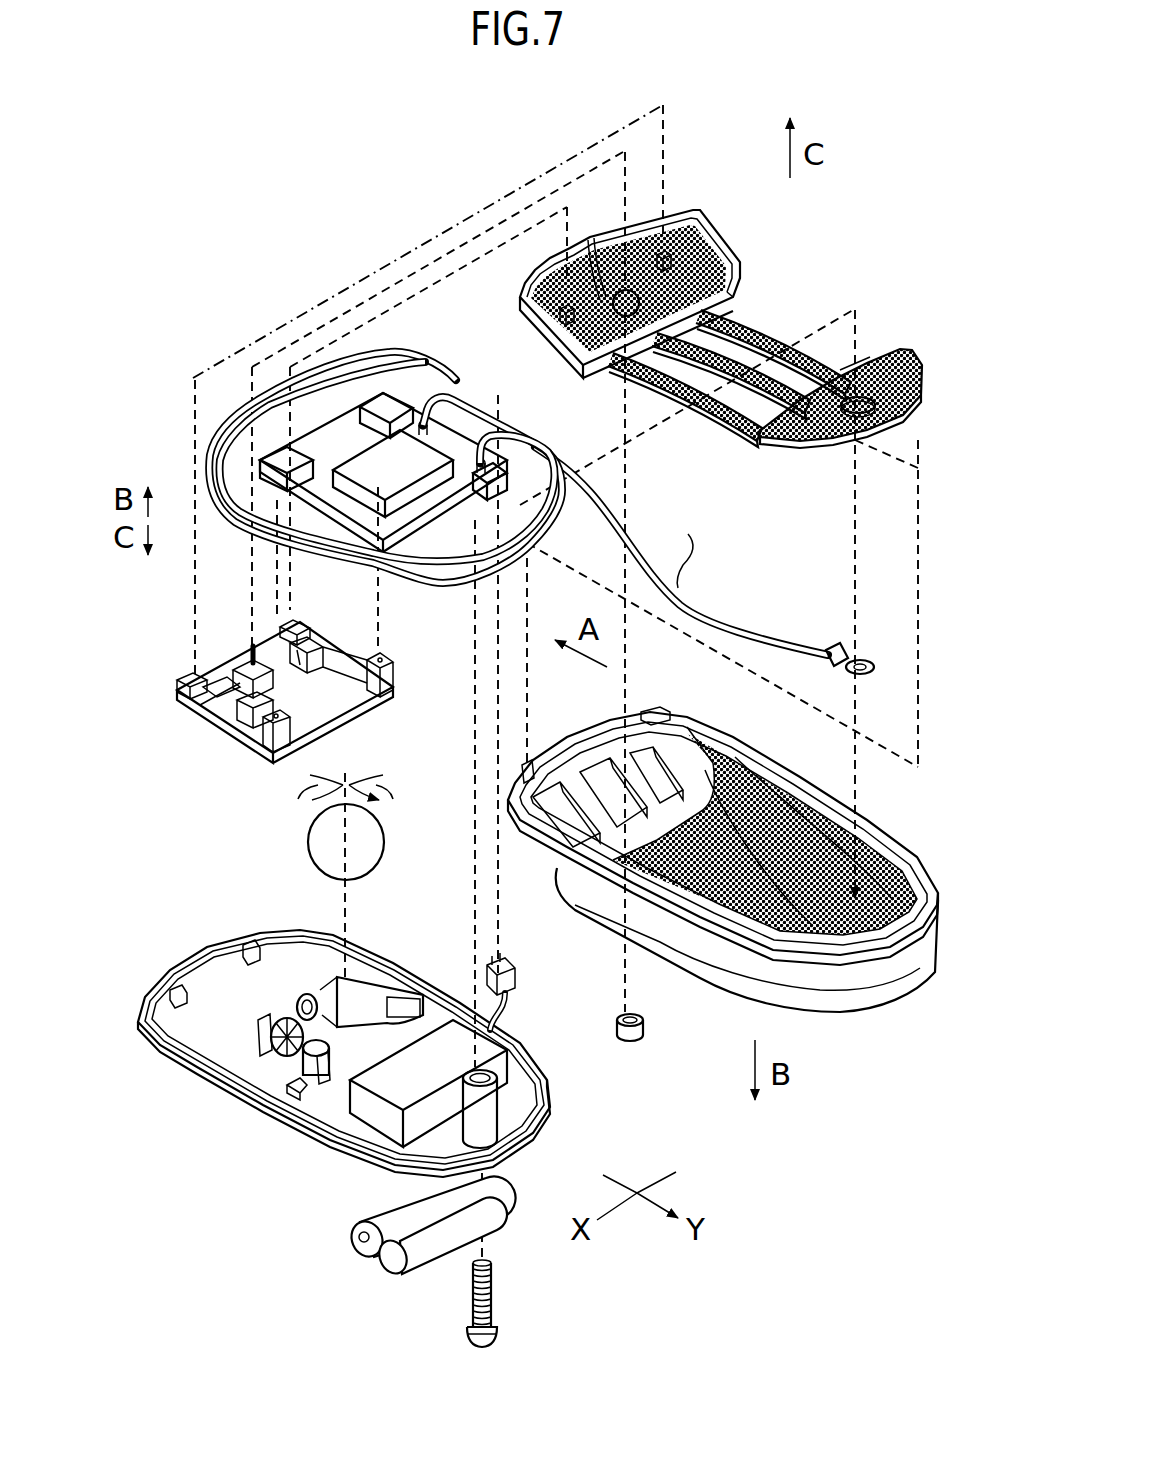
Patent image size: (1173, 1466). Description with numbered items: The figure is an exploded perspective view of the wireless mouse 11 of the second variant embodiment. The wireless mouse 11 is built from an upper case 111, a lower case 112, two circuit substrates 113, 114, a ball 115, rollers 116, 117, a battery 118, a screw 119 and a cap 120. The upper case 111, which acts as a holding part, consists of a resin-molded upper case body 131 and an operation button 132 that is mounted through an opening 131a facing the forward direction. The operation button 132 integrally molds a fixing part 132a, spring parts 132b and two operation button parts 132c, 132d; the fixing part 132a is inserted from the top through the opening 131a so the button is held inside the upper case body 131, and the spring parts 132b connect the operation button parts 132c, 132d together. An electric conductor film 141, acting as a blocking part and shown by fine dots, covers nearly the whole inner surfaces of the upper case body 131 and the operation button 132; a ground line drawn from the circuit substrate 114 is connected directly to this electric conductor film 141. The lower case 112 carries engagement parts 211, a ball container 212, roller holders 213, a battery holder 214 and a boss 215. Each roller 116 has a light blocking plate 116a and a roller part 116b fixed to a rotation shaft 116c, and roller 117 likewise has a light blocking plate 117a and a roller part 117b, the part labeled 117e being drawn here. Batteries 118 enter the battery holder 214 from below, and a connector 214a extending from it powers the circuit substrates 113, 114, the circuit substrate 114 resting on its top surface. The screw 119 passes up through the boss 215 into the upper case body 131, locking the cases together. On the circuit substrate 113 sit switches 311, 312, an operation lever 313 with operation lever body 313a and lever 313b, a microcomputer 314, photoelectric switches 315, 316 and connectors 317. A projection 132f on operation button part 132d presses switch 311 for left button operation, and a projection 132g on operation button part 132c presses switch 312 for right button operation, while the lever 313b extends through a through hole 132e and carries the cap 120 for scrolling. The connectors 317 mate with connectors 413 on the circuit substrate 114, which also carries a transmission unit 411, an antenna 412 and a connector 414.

The wireless mouse 11 is at (106, 110).
The upper case 111 is at (792, 593).
The lower case 112 is at (136, 1000).
The circuit substrate 113 is at (168, 694).
The circuit substrate 114 is at (246, 472).
The ball 115 is at (386, 845).
The roller 116 is at (162, 1087).
The light blocking plate 116a is at (320, 1062).
The roller part 116b is at (322, 1085).
The rotation shaft 116c is at (293, 1090).
The roller 117 is at (162, 800).
The light blocking plate 117a is at (330, 985).
The roller part 117b is at (312, 985).
The roller part 117e is at (300, 985).
The battery 118 is at (386, 1270).
The screw 119 is at (491, 1283).
The cap 120 is at (632, 1042).
The upper case body 131 is at (737, 715).
The opening 131a is at (705, 805).
The operation button 132 is at (765, 452).
The fixing part 132a is at (905, 368).
The spring parts 132b is at (763, 337).
The operation button part 132c is at (580, 362).
The operation button part 132d is at (733, 250).
The through hole 132e is at (629, 288).
The projection 132f is at (665, 248).
The projection 132g is at (530, 318).
The electric conductor film 141 is at (882, 350).
The engagement parts 211 is at (175, 968).
The ball container 212 is at (372, 995).
The roller holders 213 is at (347, 1010).
The battery holder 214 is at (505, 1067).
The connector 214a is at (516, 978).
The boss 215 is at (497, 1112).
The switch 311 is at (180, 682).
The switch 312 is at (295, 618).
The operation lever 313 is at (238, 660).
The operation lever body 313a is at (221, 652).
The lever 313b is at (288, 685).
The microcomputer 314 is at (210, 710).
The photoelectric switch 315 is at (237, 727).
The photoelectric switch 316 is at (297, 652).
The connectors 317 is at (292, 738).
The transmission unit 411 is at (372, 460).
The antenna 412 is at (448, 372).
The connectors 413 is at (367, 413).
The connector 414 is at (500, 458).